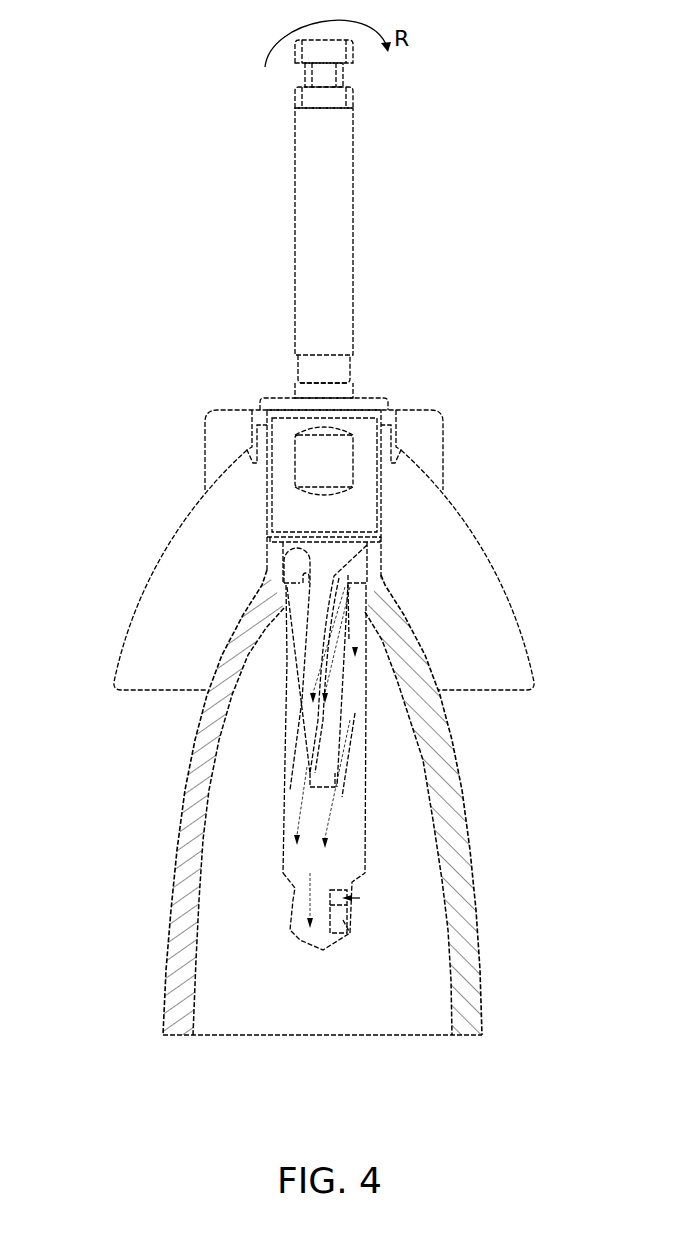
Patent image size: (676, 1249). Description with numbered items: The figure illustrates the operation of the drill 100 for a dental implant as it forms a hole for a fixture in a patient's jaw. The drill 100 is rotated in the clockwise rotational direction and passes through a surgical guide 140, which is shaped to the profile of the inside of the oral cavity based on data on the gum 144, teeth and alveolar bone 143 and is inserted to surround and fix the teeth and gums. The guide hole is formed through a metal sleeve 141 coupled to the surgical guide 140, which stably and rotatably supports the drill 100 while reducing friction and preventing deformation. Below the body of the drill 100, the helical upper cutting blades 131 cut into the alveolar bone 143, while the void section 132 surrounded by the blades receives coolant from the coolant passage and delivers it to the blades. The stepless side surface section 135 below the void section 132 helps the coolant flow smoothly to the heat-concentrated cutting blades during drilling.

The drill for a dental implant 100 is at (404, 201).
The upper cutting blades 131 is at (310, 708).
The void section 132 is at (300, 745).
The side surface section 135 is at (283, 874).
The surgical guide 140 is at (423, 447).
The sleeve 141 is at (389, 412).
The alveolar bone 143 is at (407, 897).
The gum 144 is at (450, 812).